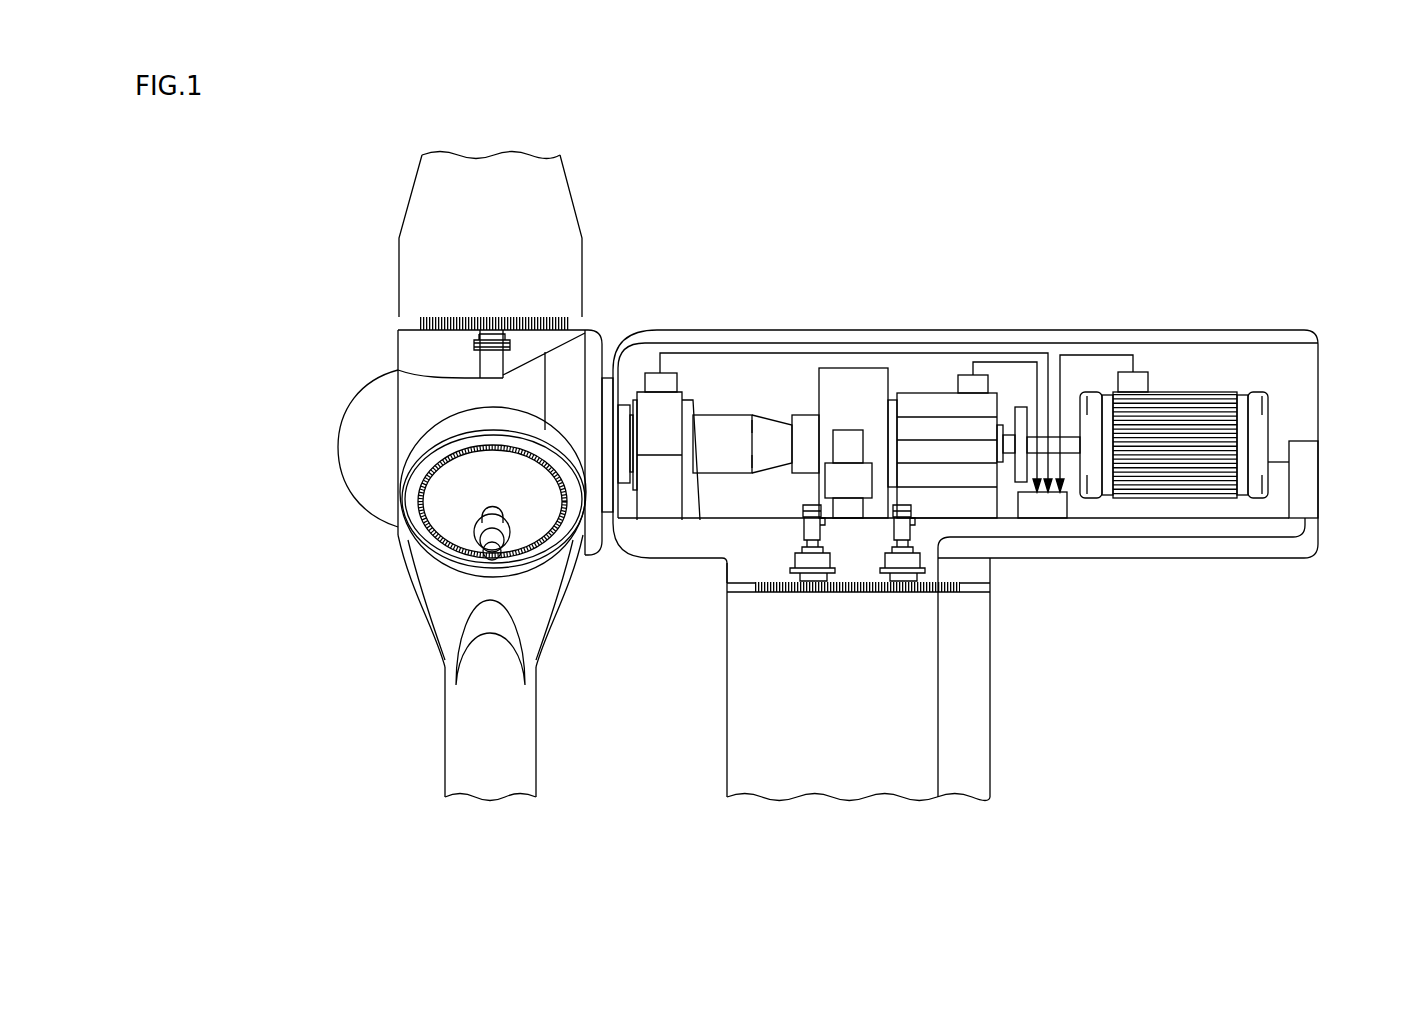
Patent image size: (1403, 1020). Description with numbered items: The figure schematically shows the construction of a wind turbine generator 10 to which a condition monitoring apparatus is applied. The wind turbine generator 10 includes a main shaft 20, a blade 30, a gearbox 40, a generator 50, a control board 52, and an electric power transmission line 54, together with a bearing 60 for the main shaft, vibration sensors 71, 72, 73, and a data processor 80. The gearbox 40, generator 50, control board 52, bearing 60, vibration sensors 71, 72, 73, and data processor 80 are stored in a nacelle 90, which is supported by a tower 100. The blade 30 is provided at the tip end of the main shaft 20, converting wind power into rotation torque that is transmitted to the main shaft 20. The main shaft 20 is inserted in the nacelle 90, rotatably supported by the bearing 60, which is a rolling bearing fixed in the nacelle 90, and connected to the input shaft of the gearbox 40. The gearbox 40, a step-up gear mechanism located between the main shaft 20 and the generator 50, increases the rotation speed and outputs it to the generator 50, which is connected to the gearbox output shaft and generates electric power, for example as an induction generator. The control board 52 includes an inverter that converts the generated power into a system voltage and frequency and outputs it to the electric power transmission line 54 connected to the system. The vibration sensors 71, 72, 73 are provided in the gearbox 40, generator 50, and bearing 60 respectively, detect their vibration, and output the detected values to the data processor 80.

The wind turbine generator 10 is at (1291, 201).
The main shaft 20 is at (388, 405).
The blade 30 is at (538, 205).
The gearbox 40 is at (903, 361).
The generator 50 is at (1187, 413).
The control board 52 is at (1310, 480).
The electric power transmission line 54 is at (1217, 540).
The bearing 60 is at (675, 410).
The vibration sensor 71 is at (965, 375).
The vibration sensor 72 is at (1140, 382).
The vibration sensor 73 is at (650, 372).
The data processor 80 is at (1043, 510).
The nacelle 90 is at (1097, 338).
The tower 100 is at (960, 718).